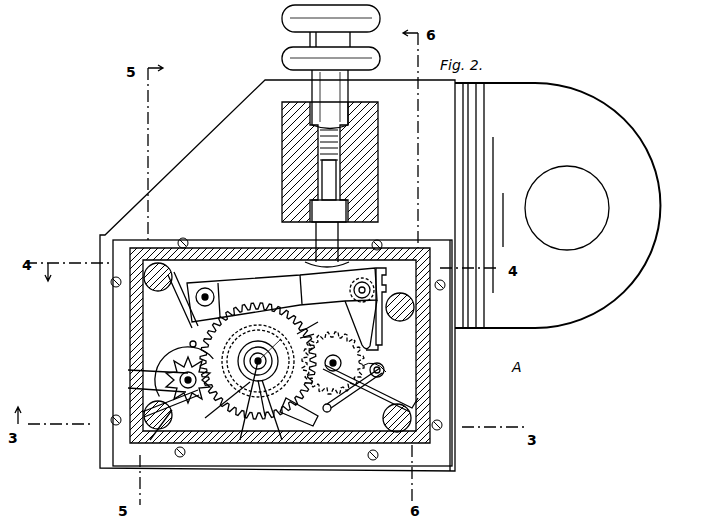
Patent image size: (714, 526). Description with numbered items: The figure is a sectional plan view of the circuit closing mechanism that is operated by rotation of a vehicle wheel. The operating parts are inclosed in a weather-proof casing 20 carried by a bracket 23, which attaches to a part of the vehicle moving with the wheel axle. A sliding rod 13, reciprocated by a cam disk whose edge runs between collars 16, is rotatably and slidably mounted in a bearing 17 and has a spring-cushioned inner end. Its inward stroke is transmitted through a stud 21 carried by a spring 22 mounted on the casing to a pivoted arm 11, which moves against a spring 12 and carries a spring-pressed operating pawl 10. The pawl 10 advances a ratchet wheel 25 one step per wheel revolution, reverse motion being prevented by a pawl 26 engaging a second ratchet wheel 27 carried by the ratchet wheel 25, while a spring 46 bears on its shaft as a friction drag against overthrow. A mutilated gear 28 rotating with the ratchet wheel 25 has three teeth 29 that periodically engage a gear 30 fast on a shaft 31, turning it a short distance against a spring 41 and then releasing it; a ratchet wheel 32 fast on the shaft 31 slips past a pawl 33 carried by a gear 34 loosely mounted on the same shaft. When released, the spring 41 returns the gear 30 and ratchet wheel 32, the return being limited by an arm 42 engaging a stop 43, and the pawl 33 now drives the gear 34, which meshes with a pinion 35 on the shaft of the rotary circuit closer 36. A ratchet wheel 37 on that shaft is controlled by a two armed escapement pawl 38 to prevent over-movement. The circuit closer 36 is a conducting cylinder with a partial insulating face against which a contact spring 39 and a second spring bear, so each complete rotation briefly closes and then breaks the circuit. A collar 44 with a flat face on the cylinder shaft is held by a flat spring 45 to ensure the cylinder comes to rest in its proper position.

The operating pawl 10 is at (382, 336).
The pivoted arm 11 is at (329, 289).
The spring 12 is at (185, 315).
The sliding rod 13 is at (312, 92).
The collars 16 is at (296, 44).
The bearing 17 is at (282, 158).
The casing 20 is at (430, 370).
The stud 21 is at (316, 237).
The spring 22 is at (248, 270).
The bracket 23 is at (555, 277).
The ratchet wheel 25 is at (357, 324).
The pawl 26 is at (385, 374).
The second ratchet wheel 27 is at (334, 398).
The mutilated gear 28 is at (372, 358).
The teeth 29 is at (360, 352).
The gear 30 is at (227, 409).
The shaft 31 is at (266, 352).
The ratchet wheel 32 is at (316, 321).
The pawl 33 is at (316, 332).
The gear 34 is at (215, 297).
The pinion 35 is at (166, 362).
The rotary circuit closer 36 is at (257, 406).
The ratchet wheel 37 is at (146, 388).
The two armed escapement pawl 38 is at (182, 333).
The contact spring 39 is at (280, 420).
The spring 41 is at (198, 394).
The arm 42 is at (314, 414).
The stop 43 is at (248, 410).
The collar 44 is at (147, 365).
The flat spring 45 is at (170, 425).
The spring 46 is at (370, 396).